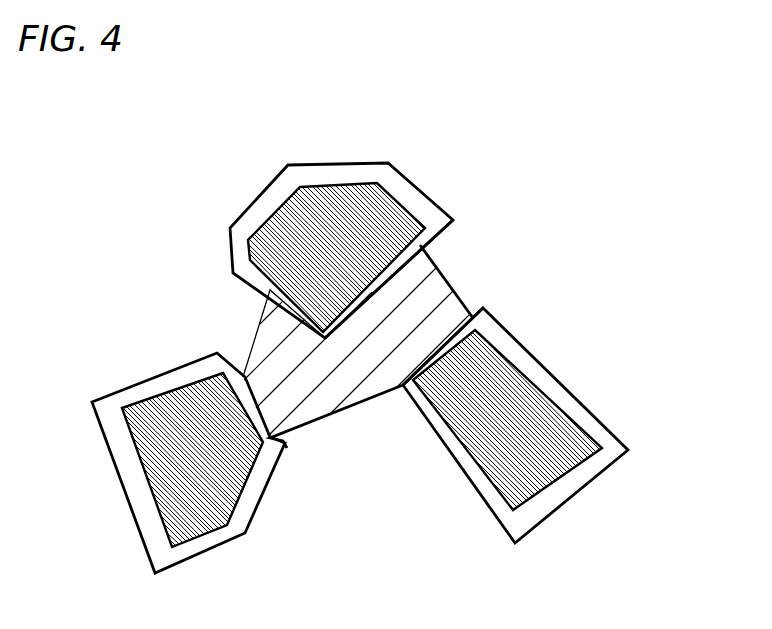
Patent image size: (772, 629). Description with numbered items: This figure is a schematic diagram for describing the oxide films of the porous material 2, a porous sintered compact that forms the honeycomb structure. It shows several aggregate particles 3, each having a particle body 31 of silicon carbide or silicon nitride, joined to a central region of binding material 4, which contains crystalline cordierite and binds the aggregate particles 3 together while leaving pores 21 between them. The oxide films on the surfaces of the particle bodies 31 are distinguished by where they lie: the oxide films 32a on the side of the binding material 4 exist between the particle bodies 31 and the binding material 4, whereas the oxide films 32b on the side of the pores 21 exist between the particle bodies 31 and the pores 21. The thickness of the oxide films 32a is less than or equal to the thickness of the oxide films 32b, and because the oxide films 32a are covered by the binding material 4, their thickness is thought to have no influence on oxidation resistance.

The porous material 2 is at (158, 147).
The aggregate particle 3 is at (410, 340).
The binding material 4 is at (275, 348).
The pore 21 is at (530, 243).
The particle body 31 is at (348, 225).
The oxide film on the side of the binding material 32a is at (397, 275).
The oxide film on the side of the pores 32b is at (350, 178).